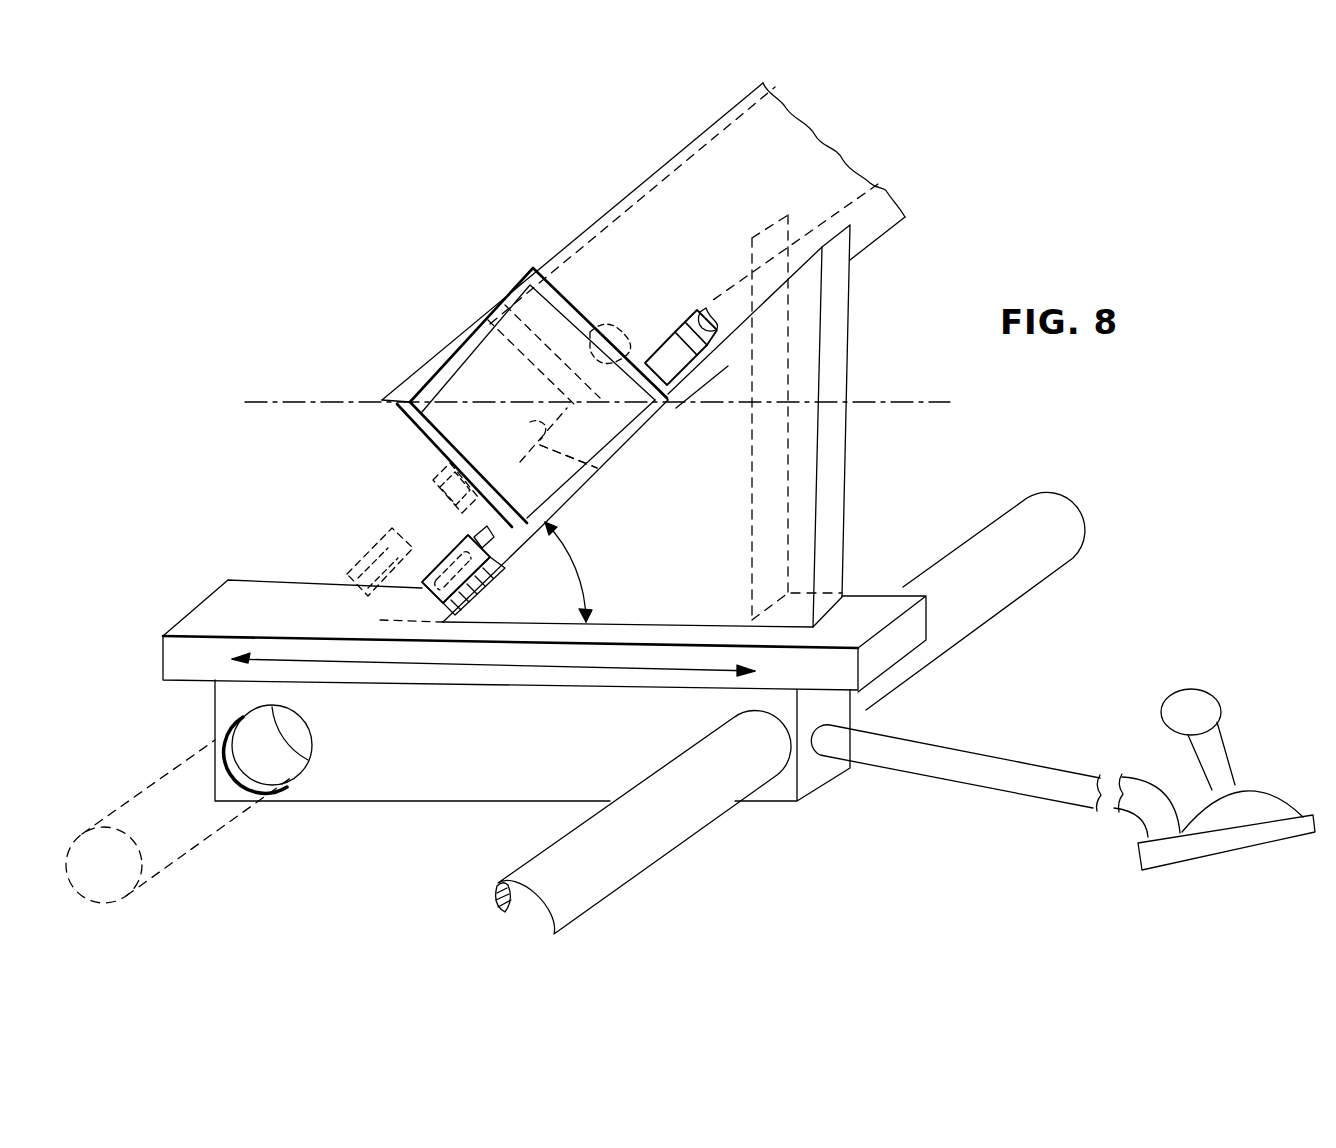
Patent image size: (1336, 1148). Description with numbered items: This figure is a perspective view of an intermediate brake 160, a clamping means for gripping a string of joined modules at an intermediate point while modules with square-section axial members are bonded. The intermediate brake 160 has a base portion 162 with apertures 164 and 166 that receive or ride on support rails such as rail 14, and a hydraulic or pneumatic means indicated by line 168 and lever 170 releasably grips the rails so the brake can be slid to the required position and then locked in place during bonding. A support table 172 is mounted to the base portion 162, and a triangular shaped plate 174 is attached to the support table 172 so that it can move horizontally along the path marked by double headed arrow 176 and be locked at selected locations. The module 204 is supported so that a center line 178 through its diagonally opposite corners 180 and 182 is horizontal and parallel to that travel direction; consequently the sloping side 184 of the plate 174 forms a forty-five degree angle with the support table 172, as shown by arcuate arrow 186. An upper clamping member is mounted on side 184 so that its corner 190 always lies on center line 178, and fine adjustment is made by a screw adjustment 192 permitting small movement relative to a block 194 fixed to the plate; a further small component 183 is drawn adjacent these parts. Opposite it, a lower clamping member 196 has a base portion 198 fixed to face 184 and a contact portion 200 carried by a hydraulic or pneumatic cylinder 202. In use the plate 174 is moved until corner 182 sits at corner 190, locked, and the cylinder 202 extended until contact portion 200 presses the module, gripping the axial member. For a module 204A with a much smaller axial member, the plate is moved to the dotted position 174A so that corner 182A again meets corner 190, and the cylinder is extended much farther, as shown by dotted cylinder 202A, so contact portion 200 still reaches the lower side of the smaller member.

The support rail 14 is at (1047, 592).
The intermediate brake 160 is at (465, 316).
The base portion 162 is at (455, 801).
The aperture 164 is at (322, 744).
The aperture 166 is at (784, 776).
The line 168 is at (977, 777).
The lever 170 is at (1178, 853).
The support table 172 is at (878, 603).
The triangular shaped plate 174 is at (838, 492).
The triangular plate position 174A is at (737, 262).
The double headed arrow 176 is at (565, 668).
The center line 178 is at (272, 398).
The corner 180 is at (397, 403).
The corner 182 is at (620, 440).
The corner 182A is at (603, 470).
The block 183 is at (668, 342).
The side 184 is at (582, 486).
The double headed arcuate arrow 186 is at (585, 558).
The corner 190 is at (668, 402).
The screw adjustment 192 is at (700, 312).
The block 194 is at (710, 358).
The lower clamping member 196 is at (467, 573).
The base portion 198 is at (430, 598).
The contact portion 200 is at (433, 442).
The hydraulic or pneumatic cylinder 202 is at (473, 538).
The cylinder in dotted line 202A is at (420, 512).
The module 204 is at (802, 150).
The module 204A is at (547, 386).